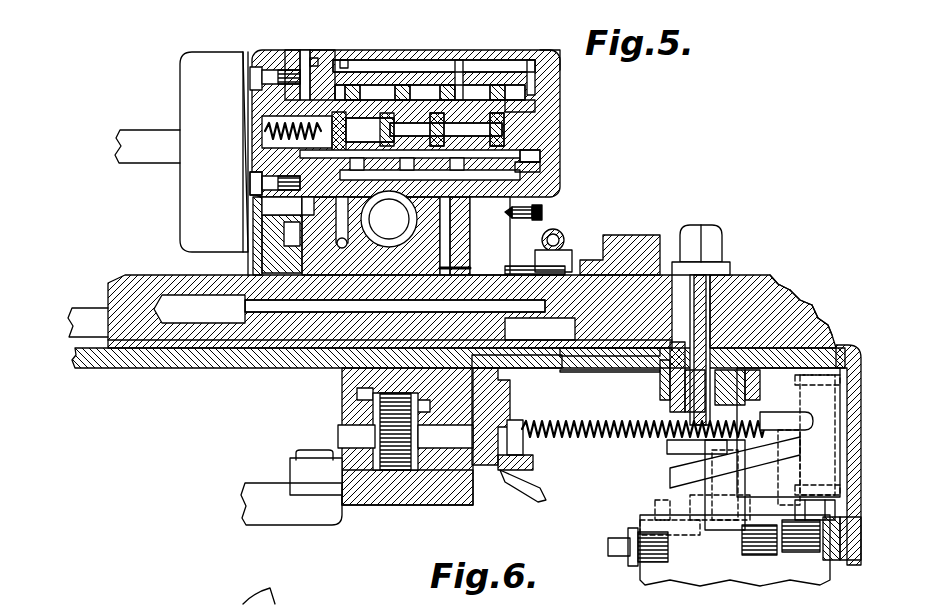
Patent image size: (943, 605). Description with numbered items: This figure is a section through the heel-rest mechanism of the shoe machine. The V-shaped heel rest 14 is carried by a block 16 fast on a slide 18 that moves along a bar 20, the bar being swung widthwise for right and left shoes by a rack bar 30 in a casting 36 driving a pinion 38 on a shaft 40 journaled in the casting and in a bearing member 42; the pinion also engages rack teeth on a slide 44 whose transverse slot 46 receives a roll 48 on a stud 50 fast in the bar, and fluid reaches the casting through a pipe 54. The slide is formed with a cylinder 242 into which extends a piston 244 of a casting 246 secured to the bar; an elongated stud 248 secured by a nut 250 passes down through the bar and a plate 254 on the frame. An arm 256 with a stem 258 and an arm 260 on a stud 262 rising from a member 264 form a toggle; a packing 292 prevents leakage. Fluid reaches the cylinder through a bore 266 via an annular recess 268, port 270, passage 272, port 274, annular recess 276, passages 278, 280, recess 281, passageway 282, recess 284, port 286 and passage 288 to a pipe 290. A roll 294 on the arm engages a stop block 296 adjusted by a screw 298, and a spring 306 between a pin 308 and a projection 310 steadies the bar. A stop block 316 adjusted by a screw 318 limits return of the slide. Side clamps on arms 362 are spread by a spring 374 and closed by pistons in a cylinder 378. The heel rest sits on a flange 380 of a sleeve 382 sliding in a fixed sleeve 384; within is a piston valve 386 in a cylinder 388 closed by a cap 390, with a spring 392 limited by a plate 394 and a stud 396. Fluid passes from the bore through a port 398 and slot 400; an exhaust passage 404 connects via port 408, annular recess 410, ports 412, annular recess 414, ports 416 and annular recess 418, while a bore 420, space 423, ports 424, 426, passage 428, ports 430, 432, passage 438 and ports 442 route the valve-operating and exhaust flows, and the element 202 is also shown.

The heel rest 14 is at (198, 62).
The block 16 is at (443, 50).
The slide 18 is at (135, 280).
The bar 20 is at (140, 360).
The rack bar 30 is at (385, 505).
The casting 36 is at (442, 505).
The pinion 38 is at (345, 438).
The shaft 40 is at (340, 438).
The bearing member 42 is at (500, 400).
The slide 44 is at (375, 404).
The transverse slot 46 is at (490, 370).
The roll 48 is at (375, 412).
The stud 50 is at (357, 392).
The pipe 54 is at (546, 496).
The recess 202 is at (540, 329).
The cylinder 242 is at (200, 362).
The piston 244 is at (275, 352).
The casting 246 is at (778, 282).
The elongated stud 248 is at (812, 308).
The nut 250 is at (722, 252).
The plate 254 is at (600, 372).
The arm 256 is at (824, 324).
The stem 258 is at (845, 562).
The arm 260 is at (667, 445).
The stud 262 is at (712, 470).
The member 264 is at (775, 582).
The bore 266 is at (545, 366).
The annular recess 268 is at (727, 275).
The port 270 is at (690, 295).
The passage 272 is at (796, 296).
The port 274 is at (748, 395).
The annular recess 276 is at (670, 372).
The passage 278 is at (850, 347).
The passage 280 is at (765, 418).
The recess 281 is at (778, 448).
The passageway 282 is at (705, 462).
The recess 284 is at (690, 500).
The port 286 is at (660, 504).
The passage 288 is at (640, 530).
The pipe 290 is at (610, 547).
The packing 292 is at (685, 400).
The roll 294 is at (810, 522).
The stop block 296 is at (752, 552).
The screw 298 is at (802, 552).
The spring 306 is at (600, 440).
The pin 308 is at (524, 447).
The projection 310 is at (800, 412).
The stop block 316 is at (545, 262).
The screw 318 is at (564, 240).
The arm 362 is at (135, 140).
The spring 374 is at (588, 258).
The cylinder 378 is at (530, 215).
The flange 380 is at (288, 50).
The sleeve 382 is at (557, 105).
The sleeve 384 is at (505, 95).
The piston valve 386 is at (557, 122).
The cylinder 388 is at (345, 150).
The cap 390 is at (545, 155).
The spring 392 is at (265, 131).
The plate 394 is at (256, 240).
The stud 396 is at (500, 130).
The port 398 is at (335, 350).
The slot 400 is at (245, 300).
The exhaust passage 404 is at (290, 222).
The port 408 is at (389, 219).
The annular recess 410 is at (403, 90).
The ports 412 is at (360, 92).
The annular recess 414 is at (389, 219).
The ports 416 is at (372, 55).
The annular recess 418 is at (345, 62).
The bore 420 is at (445, 125).
The space 423 is at (530, 163).
The port 424 is at (557, 88).
The port 426 is at (557, 68).
The passage 428 is at (540, 55).
The port 430 is at (318, 58).
The port 432 is at (475, 98).
The passage 438 is at (540, 218).
The ports 442 is at (255, 174).